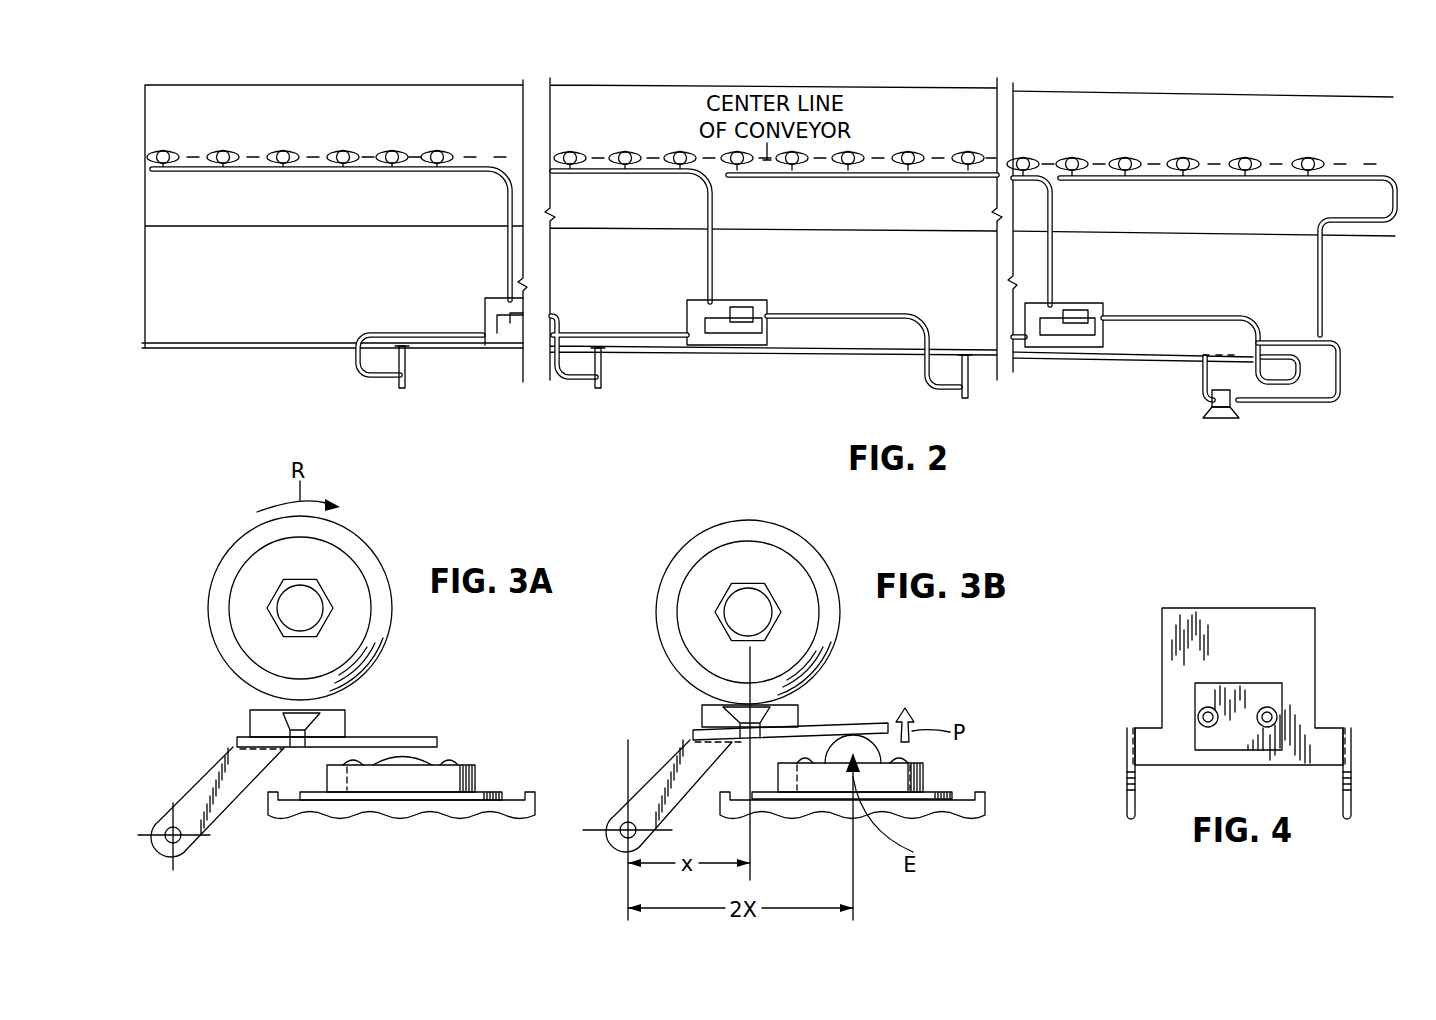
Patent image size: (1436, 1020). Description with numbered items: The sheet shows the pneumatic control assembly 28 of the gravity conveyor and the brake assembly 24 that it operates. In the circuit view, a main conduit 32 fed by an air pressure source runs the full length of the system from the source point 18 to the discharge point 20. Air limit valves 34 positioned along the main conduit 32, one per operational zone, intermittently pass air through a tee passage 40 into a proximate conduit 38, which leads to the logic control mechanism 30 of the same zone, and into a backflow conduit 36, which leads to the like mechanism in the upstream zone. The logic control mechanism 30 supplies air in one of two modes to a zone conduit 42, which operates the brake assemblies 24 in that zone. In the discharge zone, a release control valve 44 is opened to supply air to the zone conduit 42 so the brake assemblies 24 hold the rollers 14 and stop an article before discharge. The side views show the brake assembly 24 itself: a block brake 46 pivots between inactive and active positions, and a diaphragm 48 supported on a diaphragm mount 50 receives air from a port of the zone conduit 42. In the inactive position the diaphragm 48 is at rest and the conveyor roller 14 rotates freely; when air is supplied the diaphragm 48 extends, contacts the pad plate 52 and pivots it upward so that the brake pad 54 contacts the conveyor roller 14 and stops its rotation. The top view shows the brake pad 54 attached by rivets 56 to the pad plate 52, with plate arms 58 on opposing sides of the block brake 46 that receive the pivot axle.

In FIG. 3B, the conveyor roller 14 is at (688, 544).
In FIG. 2, the source point 18 is at (183, 246).
In FIG. 2, the discharge point 20 is at (1377, 250).
In FIG. 3A, the brake assembly 24 is at (422, 719).
In FIG. 2, the pneumatic control assembly 28 is at (838, 371).
In FIG. 2, the logic control mechanism 30 is at (747, 300).
In FIG. 2, the main conduit 32 is at (237, 349).
In FIG. 2, the air limit valve 34 is at (606, 353).
In FIG. 2, the backflow conduit 36 is at (856, 315).
In FIG. 2, the proximate conduit 38 is at (637, 332).
In FIG. 2, the tee passage 40 is at (929, 338).
In FIG. 2, the zone conduit 42 is at (710, 196).
In FIG. 2, the release control valve 44 is at (1223, 411).
In FIG. 4, the block brake 46 is at (1140, 664).
In FIG. 2, the diaphragm 48 is at (1183, 157).
In FIG. 3A, the diaphragm 48 is at (404, 760).
In FIG. 3A, the diaphragm mount 50 is at (345, 810).
In FIG. 3B, the pad plate 52 is at (868, 725).
In FIG. 4, the pad plate 52 is at (1234, 620).
In FIG. 3A, the brake pad 54 is at (250, 722).
In FIG. 4, the brake pad 54 is at (1205, 693).
In FIG. 3B, the rivets 56 is at (740, 717).
In FIG. 4, the rivets 56 is at (1277, 713).
In FIG. 3A, the plate arms 58 is at (214, 777).
In FIG. 4, the plate arms 58 is at (1130, 785).